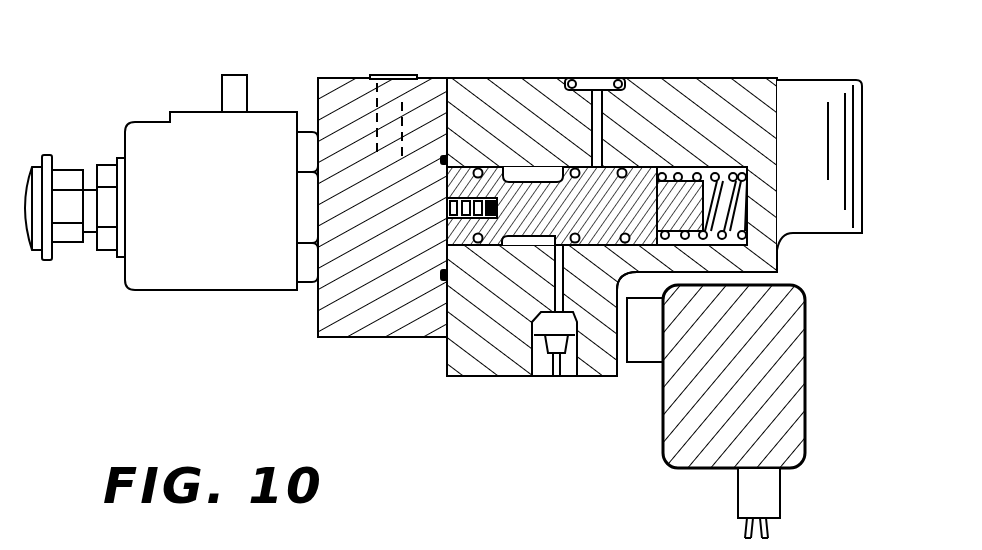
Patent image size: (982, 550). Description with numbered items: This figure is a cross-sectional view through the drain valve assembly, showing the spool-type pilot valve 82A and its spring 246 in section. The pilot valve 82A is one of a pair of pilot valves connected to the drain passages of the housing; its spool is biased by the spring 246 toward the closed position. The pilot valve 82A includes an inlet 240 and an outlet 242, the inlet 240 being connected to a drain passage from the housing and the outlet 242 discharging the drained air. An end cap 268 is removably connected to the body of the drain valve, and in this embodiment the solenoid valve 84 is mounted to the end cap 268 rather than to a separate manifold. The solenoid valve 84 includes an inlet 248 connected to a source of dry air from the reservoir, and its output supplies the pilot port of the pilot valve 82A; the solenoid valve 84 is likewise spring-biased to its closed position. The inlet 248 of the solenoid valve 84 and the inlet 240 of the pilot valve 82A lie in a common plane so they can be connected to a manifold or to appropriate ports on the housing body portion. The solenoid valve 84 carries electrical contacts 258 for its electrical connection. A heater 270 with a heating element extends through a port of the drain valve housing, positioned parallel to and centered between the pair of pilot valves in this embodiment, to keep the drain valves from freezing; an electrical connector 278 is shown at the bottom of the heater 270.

The solenoid valve 84 is at (185, 263).
The electrical contacts 258 is at (227, 85).
The end cap 268 is at (365, 318).
The inlet 248 is at (387, 97).
The inlet 240 is at (608, 78).
The pilot valve 82A is at (643, 168).
The spring 246 is at (720, 170).
The outlet 242 is at (558, 352).
The heater 270 is at (698, 450).
The electrical connector 278 is at (767, 492).